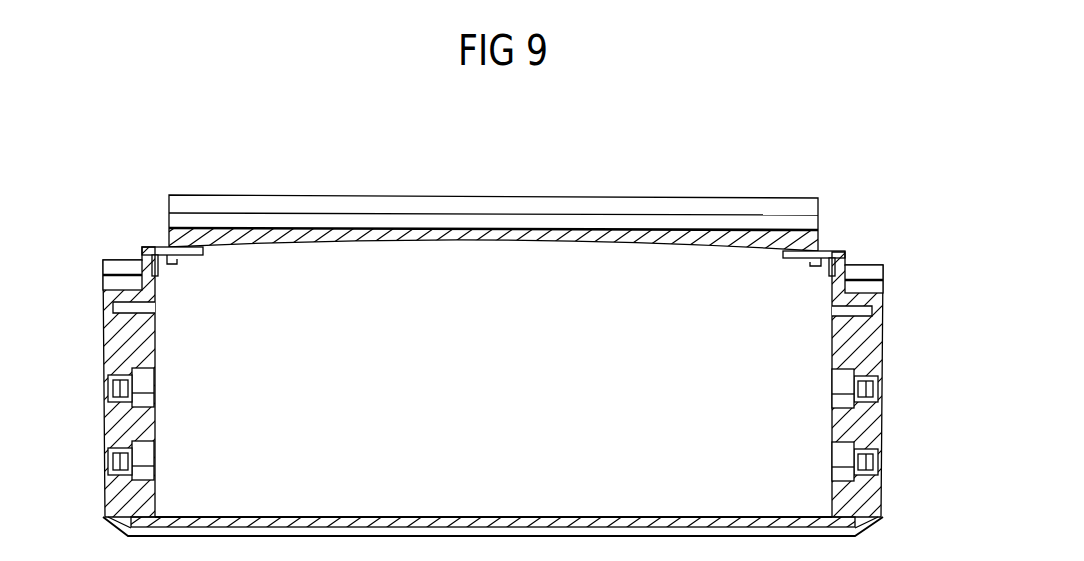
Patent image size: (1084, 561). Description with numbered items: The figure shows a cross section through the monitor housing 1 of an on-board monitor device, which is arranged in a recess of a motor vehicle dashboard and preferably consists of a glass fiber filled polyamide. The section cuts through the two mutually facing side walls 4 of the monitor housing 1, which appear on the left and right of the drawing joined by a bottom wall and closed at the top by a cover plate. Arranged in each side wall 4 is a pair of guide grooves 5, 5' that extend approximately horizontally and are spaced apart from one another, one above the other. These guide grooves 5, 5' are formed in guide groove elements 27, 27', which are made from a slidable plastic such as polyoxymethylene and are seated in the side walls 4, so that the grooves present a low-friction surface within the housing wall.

The monitor housing 1 is at (386, 170).
The side walls 4 is at (123, 334).
The guide groove element 27 is at (502, 381).
The guide groove element 27' is at (503, 453).
The guide groove 5 is at (884, 396).
The guide groove 5' is at (889, 467).